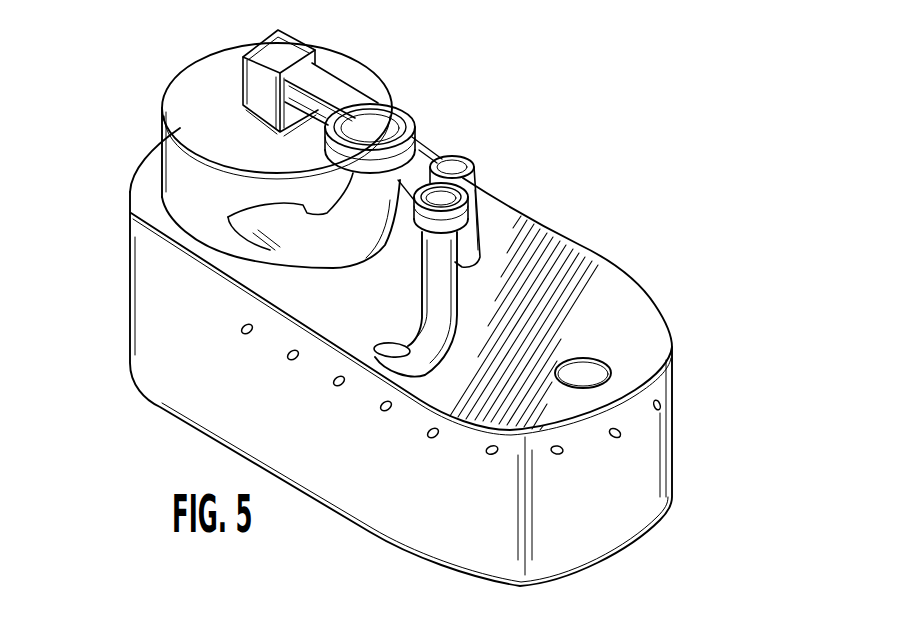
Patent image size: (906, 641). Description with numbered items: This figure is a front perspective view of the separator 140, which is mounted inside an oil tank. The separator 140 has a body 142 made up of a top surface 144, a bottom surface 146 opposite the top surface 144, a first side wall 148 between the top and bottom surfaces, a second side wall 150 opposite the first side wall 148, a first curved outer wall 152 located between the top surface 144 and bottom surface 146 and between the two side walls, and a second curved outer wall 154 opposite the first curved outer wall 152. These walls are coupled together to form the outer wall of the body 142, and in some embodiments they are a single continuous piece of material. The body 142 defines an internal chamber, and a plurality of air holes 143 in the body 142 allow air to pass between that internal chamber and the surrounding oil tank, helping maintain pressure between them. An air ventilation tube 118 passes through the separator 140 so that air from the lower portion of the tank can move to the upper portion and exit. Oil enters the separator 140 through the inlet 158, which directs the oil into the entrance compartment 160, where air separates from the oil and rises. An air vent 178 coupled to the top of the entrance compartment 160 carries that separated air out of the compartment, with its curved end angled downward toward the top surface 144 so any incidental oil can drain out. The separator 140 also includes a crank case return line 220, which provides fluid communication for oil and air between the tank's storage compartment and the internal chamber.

The separator 140 is at (750, 265).
The body 142 is at (86, 295).
The air holes 143 is at (556, 457).
The top surface 144 is at (593, 286).
The bottom surface 146 is at (338, 518).
The first side wall 148 is at (210, 381).
The second side wall 150 is at (676, 352).
The first curved outer wall 152 is at (634, 477).
The second curved outer wall 154 is at (124, 229).
The inlet 158 is at (400, 113).
The entrance compartment 160 is at (180, 172).
The air vent 178 is at (273, 52).
The air ventilation tube 118 is at (474, 165).
The crank case return line 220 is at (466, 205).